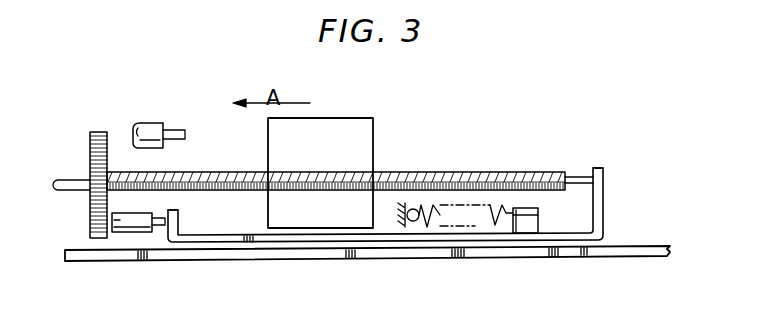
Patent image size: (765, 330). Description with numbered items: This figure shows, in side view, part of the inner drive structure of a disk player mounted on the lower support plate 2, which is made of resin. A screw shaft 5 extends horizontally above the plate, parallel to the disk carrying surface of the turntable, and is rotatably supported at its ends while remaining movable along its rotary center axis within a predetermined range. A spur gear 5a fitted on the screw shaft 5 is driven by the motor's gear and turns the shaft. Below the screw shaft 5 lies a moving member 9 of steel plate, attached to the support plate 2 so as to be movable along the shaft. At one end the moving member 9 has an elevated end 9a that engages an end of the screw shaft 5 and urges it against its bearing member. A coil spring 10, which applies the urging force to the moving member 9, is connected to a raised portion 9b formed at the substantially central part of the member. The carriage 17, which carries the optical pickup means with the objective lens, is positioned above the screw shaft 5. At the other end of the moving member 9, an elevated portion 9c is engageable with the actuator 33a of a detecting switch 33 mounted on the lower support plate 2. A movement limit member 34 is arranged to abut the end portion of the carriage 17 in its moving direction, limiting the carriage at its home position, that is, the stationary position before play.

The lower support plate 2 is at (383, 257).
The screw shaft 5 is at (490, 172).
The spur gear 5a is at (90, 210).
The moving member 9 is at (258, 235).
The elevated end 9a is at (603, 205).
The raised portion 9b is at (525, 233).
The elevated portion 9c is at (178, 222).
The coil spring 10 is at (473, 228).
The carriage 17 is at (356, 123).
The detecting switch 33 is at (125, 233).
The actuator 33a is at (160, 226).
The movement limit member 34 is at (178, 122).